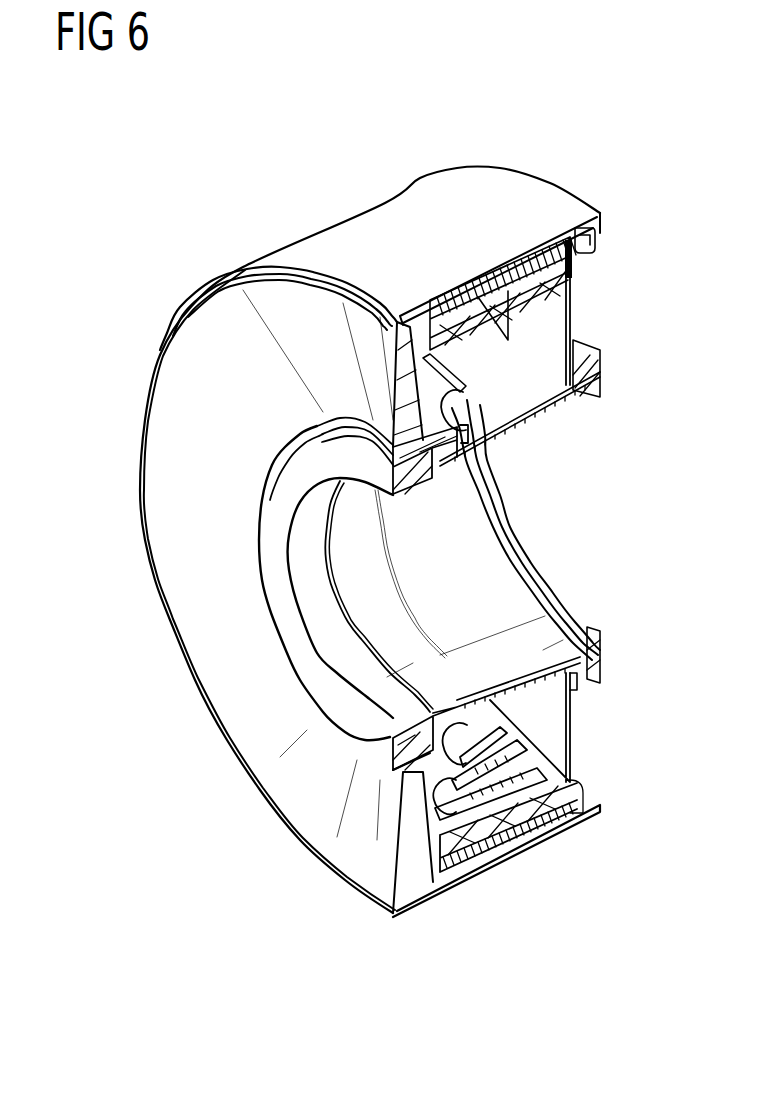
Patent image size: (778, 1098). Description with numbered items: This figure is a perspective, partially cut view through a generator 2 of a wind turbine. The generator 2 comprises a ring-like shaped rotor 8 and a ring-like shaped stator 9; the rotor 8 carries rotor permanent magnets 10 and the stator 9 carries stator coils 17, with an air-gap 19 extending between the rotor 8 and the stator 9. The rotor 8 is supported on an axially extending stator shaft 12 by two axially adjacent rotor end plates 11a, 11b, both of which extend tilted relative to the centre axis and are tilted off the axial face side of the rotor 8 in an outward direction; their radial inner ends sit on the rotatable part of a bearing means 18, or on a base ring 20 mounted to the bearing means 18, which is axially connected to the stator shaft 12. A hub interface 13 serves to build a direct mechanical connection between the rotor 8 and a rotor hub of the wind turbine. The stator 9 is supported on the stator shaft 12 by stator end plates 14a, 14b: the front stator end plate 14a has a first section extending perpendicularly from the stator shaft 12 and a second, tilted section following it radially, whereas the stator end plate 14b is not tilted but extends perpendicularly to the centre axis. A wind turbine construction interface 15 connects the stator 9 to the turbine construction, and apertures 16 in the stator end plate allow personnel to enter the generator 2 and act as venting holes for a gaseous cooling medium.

The generator 2 is at (252, 179).
The rotor 8 is at (542, 181).
The stator 9 is at (589, 302).
The rotor permanent magnets 10 is at (470, 392).
The front rotor end plate 11a is at (400, 383).
The rotor end plate 11b is at (462, 400).
The stator shaft 12 is at (547, 640).
The hub interface 13 is at (320, 427).
The stator end plate 14a is at (460, 377).
The stator end plate 14b is at (572, 330).
The wind turbine construction interface 15 is at (600, 653).
The apertures 16 is at (507, 330).
The stator coils 17 is at (585, 245).
The bearing means 18 is at (412, 474).
The air-gap 19 is at (561, 396).
The base ring 20 is at (493, 517).